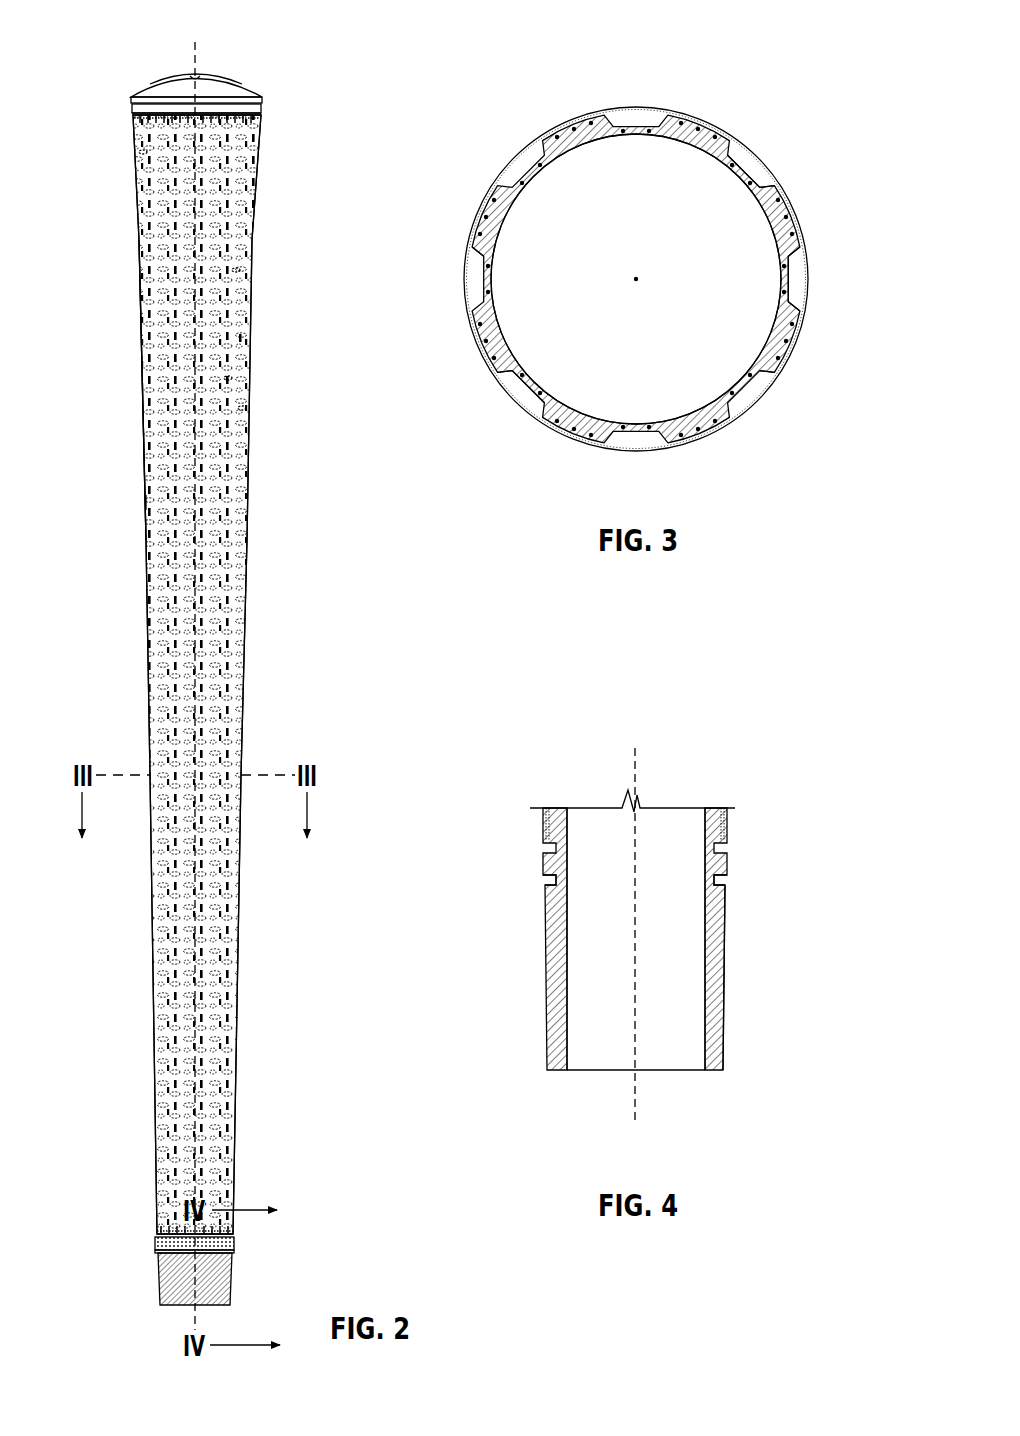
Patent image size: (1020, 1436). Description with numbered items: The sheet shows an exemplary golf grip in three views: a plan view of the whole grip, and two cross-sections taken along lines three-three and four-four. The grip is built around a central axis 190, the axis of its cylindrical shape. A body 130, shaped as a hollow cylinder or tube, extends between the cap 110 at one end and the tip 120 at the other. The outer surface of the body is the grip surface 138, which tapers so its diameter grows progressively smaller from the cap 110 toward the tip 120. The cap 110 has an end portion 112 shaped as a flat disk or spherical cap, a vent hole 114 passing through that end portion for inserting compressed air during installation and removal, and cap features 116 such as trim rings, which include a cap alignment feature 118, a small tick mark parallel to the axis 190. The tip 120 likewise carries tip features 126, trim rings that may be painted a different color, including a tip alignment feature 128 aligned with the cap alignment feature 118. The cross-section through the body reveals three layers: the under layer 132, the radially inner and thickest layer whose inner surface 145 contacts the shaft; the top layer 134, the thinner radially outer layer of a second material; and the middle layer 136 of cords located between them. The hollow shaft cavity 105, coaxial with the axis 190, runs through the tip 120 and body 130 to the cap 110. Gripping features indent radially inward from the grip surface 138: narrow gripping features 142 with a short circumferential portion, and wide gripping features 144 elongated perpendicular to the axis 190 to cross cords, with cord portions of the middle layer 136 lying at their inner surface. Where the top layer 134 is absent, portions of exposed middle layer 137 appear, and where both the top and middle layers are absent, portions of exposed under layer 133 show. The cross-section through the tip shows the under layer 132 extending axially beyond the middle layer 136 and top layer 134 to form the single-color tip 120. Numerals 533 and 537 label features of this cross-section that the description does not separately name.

In FIG. 3, the shaft cavity 105 is at (565, 210).
In FIG. 4, the shaft cavity 105 is at (668, 1056).
In FIG. 2, the cap 110 is at (135, 97).
In FIG. 2, the end portion 112 is at (240, 80).
In FIG. 2, the vent hole 114 is at (197, 76).
In FIG. 2, the cap features 116 is at (255, 113).
In FIG. 2, the cap alignment feature 118 is at (187, 118).
In FIG. 2, the tip 120 is at (165, 1290).
In FIG. 4, the tip 120 is at (490, 855).
In FIG. 2, the tip features 126 is at (233, 1246).
In FIG. 4, the tip features 126 is at (730, 876).
In FIG. 2, the tip alignment feature 128 is at (180, 1226).
In FIG. 2, the body 130 is at (242, 200).
In FIG. 3, the body 130 is at (590, 113).
In FIG. 3, the under layer 132 is at (800, 232).
In FIG. 4, the under layer 132 is at (722, 950).
In FIG. 2, the portions of exposed under layer 133 is at (140, 152).
In FIG. 2, the top layer 134 is at (148, 363).
In FIG. 3, the top layer 134 is at (790, 205).
In FIG. 4, the top layer 134 is at (730, 822).
In FIG. 3, the middle layer 136 is at (752, 158).
In FIG. 2, the portions of exposed middle layer 137 is at (230, 378).
In FIG. 2, the grip surface 138 is at (147, 502).
In FIG. 3, the grip surface 138 is at (516, 404).
In FIG. 2, the narrow gripping features 142 is at (240, 338).
In FIG. 2, the wide gripping features 144 is at (236, 270).
In FIG. 3, the wide gripping features 144 is at (805, 270).
In FIG. 3, the inner surface 145 is at (534, 382).
In FIG. 2, the axis 190 is at (197, 47).
In FIG. 3, the axis 190 is at (638, 279).
In FIG. 4, the axis 190 is at (640, 790).
In FIG. 3, the pocket 533 is at (470, 315).
In FIG. 3, the pocket 537 is at (755, 405).